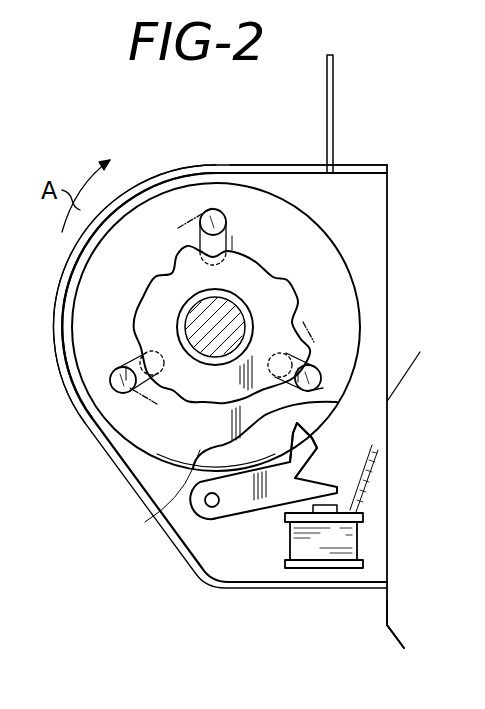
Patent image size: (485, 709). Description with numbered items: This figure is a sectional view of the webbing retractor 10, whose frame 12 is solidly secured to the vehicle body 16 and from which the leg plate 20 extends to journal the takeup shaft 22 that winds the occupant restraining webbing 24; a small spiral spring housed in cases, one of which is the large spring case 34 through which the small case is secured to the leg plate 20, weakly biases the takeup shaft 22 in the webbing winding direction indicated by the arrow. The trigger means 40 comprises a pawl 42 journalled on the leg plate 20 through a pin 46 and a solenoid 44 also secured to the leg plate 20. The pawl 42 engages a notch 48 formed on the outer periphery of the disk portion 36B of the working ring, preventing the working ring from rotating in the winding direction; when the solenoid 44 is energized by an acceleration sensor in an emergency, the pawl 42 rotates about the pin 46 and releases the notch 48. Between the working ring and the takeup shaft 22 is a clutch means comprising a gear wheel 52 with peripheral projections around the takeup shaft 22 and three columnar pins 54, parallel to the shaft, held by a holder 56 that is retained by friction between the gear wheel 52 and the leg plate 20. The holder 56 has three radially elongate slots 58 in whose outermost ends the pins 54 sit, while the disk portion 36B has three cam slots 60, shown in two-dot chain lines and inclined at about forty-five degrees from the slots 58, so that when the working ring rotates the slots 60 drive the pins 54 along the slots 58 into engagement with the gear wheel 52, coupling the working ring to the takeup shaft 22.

The webbing retractor 10 is at (394, 152).
The frame 12 is at (386, 234).
The vehicle body 16 is at (390, 624).
The leg plate 20 is at (300, 178).
The takeup shaft 22 is at (232, 314).
The occupant restraining webbing 24 is at (334, 130).
The large spring case 34 is at (185, 165).
The disk portion 36B is at (147, 493).
The trigger means 40 is at (377, 466).
The pawl 42 is at (240, 508).
The solenoid 44 is at (345, 534).
The pin 46 is at (213, 508).
The notch 48 is at (318, 440).
The gear wheel 52 is at (264, 274).
The pins 54 is at (226, 221).
The holder 56 is at (214, 188).
The slots 58 is at (231, 245).
The slots 60 is at (182, 228).